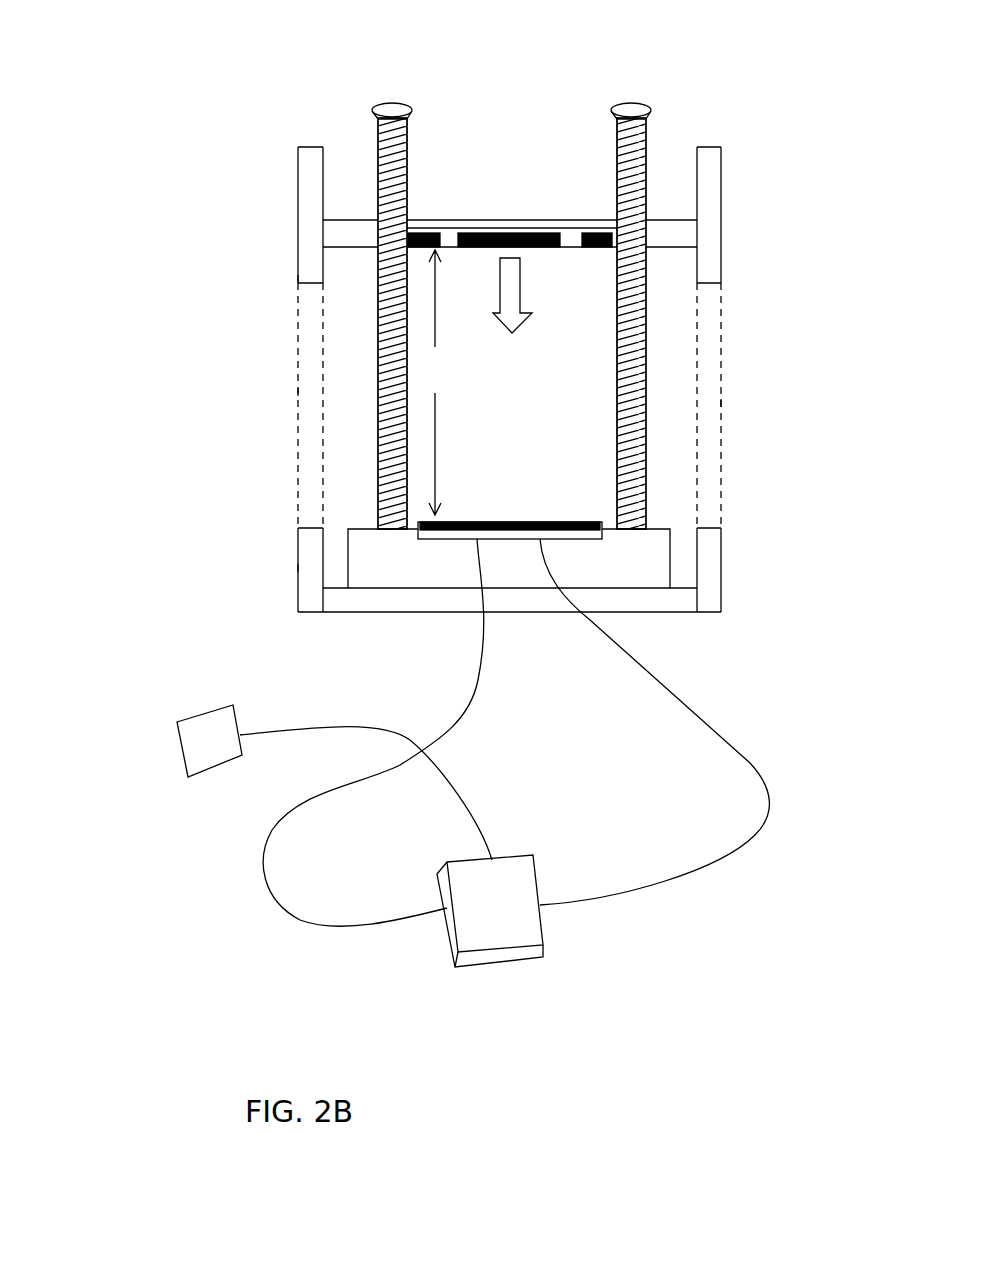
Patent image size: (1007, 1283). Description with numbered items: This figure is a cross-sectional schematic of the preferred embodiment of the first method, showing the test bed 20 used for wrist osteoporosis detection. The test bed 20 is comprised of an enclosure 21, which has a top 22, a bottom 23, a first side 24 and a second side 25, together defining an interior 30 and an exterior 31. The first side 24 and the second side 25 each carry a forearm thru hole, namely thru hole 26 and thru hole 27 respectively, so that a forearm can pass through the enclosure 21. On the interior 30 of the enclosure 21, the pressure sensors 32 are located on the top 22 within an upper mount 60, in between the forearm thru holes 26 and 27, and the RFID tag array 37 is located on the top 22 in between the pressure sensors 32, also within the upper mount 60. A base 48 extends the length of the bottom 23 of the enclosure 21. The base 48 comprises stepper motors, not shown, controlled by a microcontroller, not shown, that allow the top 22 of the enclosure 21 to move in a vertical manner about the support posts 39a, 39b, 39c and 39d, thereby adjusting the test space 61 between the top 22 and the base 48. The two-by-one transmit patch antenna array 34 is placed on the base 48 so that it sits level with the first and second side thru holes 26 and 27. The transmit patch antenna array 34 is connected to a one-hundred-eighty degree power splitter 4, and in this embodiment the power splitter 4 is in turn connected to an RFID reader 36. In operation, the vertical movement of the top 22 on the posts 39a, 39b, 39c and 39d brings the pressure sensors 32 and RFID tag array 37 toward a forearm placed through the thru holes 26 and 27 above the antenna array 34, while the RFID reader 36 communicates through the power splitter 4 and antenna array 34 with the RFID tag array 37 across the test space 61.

The 180 degree power splitter 4 is at (520, 937).
The test bed 20 is at (197, 372).
The enclosure 21 is at (318, 183).
The top 22 is at (667, 220).
The bottom 23 is at (653, 612).
The first side 24 is at (723, 247).
The second side 25 is at (302, 568).
The forearm thru hole 26 is at (715, 403).
The forearm thru hole 27 is at (302, 392).
The interior 30 is at (590, 485).
The exterior 31 is at (297, 275).
The pressure sensors 32 is at (418, 222).
The 2×1 transmit patch antenna array 34 is at (605, 530).
The RFID reader 36 is at (209, 741).
The RFID tag array 37 is at (498, 220).
The support post 39a is at (410, 140).
The support post 39b is at (650, 140).
The support post 39c is at (412, 97).
The support post 39d is at (650, 98).
The base 48 is at (643, 575).
The upper mount 60 is at (630, 234).
The test space 61 is at (435, 382).